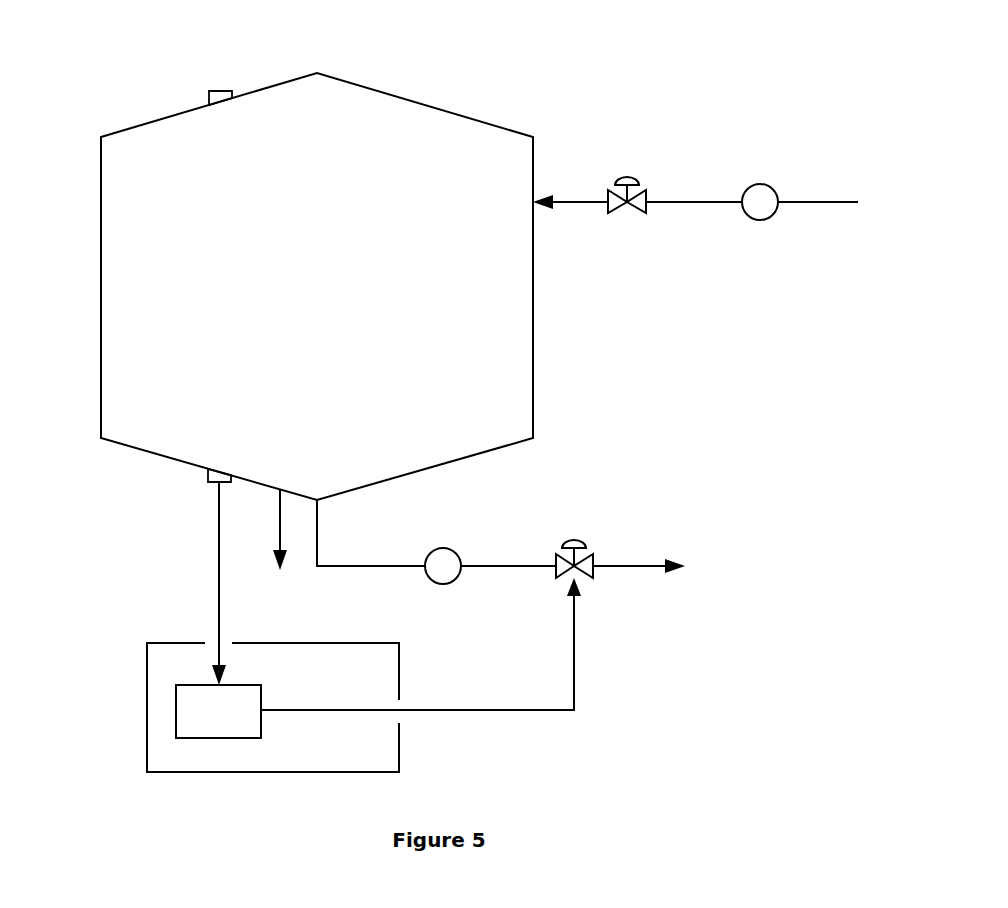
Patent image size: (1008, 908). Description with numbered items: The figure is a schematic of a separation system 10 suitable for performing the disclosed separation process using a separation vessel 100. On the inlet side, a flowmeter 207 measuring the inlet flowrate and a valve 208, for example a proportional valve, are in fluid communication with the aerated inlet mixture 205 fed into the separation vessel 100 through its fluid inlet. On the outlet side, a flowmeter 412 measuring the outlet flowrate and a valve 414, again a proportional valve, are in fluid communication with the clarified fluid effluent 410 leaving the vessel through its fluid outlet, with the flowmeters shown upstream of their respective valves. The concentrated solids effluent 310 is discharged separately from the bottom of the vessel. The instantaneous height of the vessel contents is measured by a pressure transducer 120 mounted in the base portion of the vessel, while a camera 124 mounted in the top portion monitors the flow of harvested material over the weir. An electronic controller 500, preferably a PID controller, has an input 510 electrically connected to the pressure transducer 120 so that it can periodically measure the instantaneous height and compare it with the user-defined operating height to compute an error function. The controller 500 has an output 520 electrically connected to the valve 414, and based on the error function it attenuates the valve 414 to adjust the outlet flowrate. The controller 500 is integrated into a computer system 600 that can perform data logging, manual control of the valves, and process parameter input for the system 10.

The separation system 10 is at (82, 57).
The separation vessel 100 is at (534, 120).
The camera 124 is at (208, 87).
The pressure transducer 120 is at (222, 465).
The input 510 is at (198, 583).
The concentrated solids effluent 310 is at (281, 547).
The clarified fluid effluent 410 is at (530, 539).
The flowmeter 412 is at (458, 548).
The valve 414 is at (595, 548).
The output 520 is at (443, 644).
The computer system 600 is at (157, 635).
The electronic controller 500 is at (267, 696).
The aerated inlet mixture 205 is at (724, 202).
The valve 208 is at (645, 187).
The flowmeter 207 is at (775, 188).